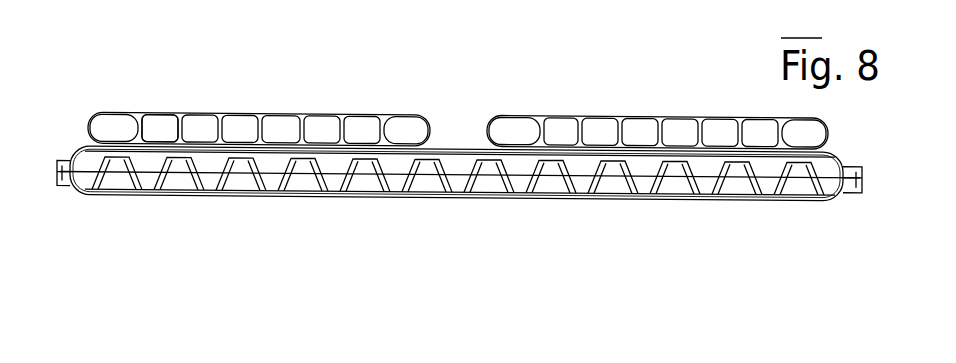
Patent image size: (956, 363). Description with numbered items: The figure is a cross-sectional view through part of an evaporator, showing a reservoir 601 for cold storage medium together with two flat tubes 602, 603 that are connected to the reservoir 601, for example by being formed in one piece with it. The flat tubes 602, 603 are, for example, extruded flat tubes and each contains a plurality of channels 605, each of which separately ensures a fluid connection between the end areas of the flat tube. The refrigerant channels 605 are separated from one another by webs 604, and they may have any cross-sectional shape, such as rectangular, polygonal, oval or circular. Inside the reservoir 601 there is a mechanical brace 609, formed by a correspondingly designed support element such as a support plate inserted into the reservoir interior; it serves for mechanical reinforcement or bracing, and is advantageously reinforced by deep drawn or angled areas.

The reservoir 601 is at (357, 193).
The flat tube 602 is at (338, 104).
The flat tube 603 is at (668, 94).
The web 604 is at (186, 125).
The channel 605 is at (105, 123).
The mechanical brace 609 is at (696, 190).